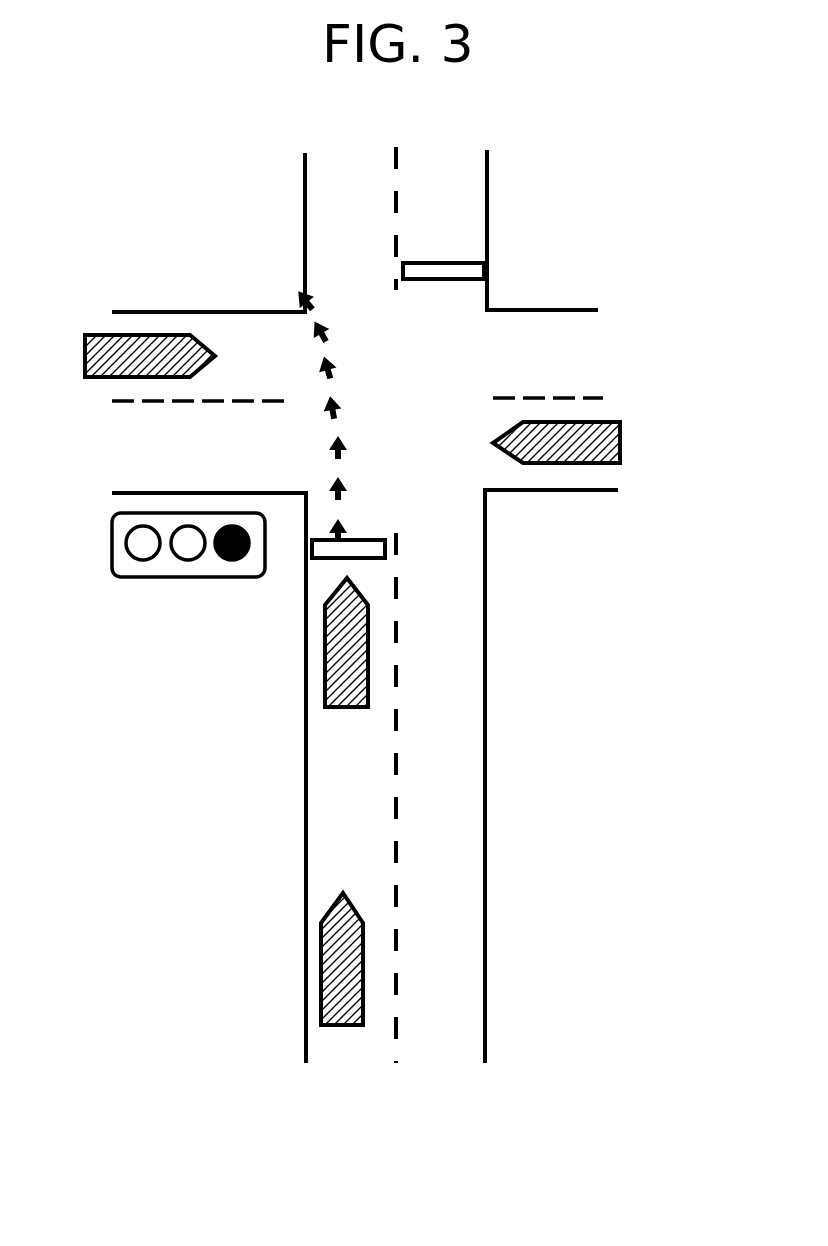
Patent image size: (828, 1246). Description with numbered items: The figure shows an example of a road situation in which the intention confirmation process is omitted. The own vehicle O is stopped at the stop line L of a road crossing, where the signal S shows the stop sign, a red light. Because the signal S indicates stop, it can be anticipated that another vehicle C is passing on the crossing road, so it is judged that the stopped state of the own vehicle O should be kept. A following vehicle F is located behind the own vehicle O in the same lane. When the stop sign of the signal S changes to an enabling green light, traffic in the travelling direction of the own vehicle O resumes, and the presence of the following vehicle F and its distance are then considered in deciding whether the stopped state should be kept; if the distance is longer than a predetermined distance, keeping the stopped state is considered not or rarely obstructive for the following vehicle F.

The turning course (right-turn trajectory) at intersection cr is at (312, 345).
The stop line L is at (455, 262).
The vehicle running on a crossing lane C is at (85, 350).
The signal S is at (112, 543).
The own vehicle O is at (325, 650).
The following vehicle F is at (321, 978).